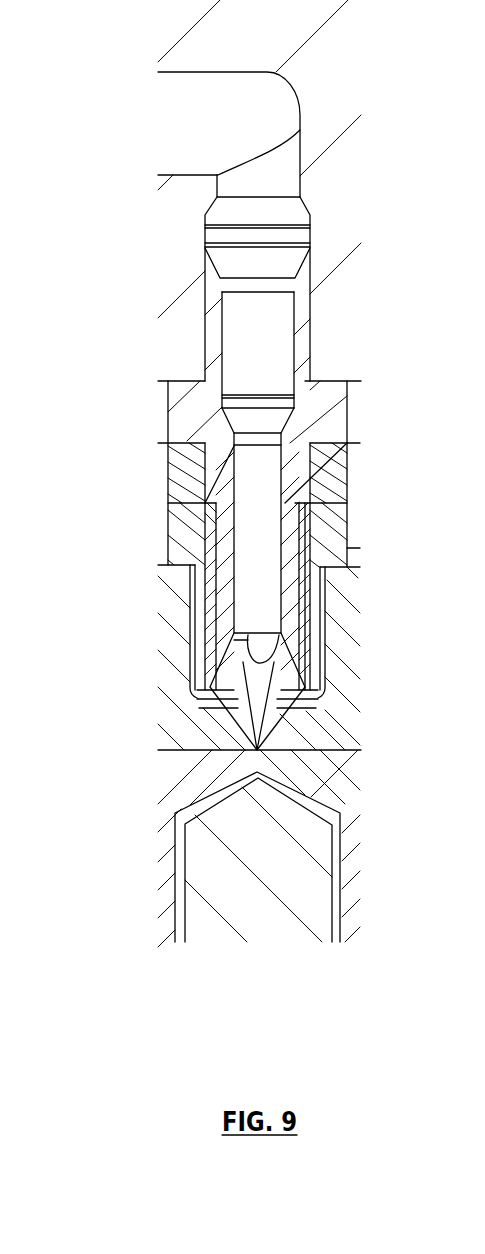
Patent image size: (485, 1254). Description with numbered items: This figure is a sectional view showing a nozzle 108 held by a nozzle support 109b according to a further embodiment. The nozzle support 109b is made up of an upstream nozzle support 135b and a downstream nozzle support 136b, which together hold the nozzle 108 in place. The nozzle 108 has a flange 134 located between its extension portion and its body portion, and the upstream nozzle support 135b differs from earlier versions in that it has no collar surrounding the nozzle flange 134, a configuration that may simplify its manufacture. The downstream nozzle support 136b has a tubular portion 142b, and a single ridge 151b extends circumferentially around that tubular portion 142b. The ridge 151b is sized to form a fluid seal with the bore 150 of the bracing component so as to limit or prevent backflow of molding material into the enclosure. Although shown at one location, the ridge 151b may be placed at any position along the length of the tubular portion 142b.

The nozzle 108 is at (317, 368).
The flange 134 is at (181, 418).
The upstream nozzle support 135b is at (172, 478).
The nozzle support 109b is at (352, 503).
The downstream nozzle support 136b is at (182, 538).
The tubular portion 142b is at (204, 597).
The bore 150 is at (204, 655).
The ridge 151b is at (192, 686).